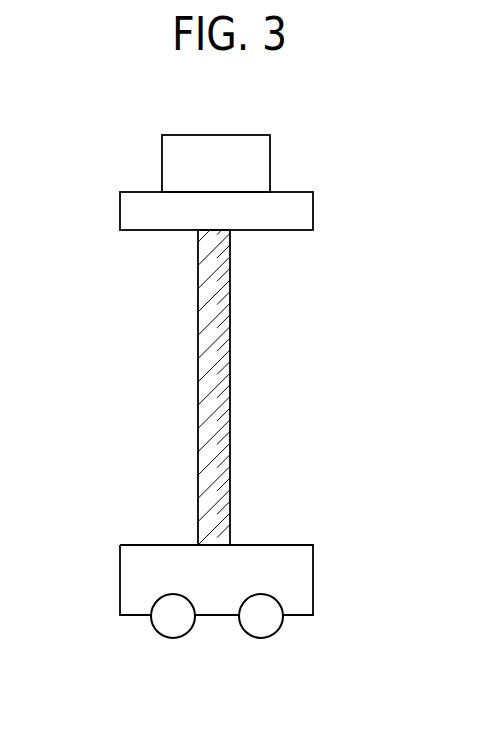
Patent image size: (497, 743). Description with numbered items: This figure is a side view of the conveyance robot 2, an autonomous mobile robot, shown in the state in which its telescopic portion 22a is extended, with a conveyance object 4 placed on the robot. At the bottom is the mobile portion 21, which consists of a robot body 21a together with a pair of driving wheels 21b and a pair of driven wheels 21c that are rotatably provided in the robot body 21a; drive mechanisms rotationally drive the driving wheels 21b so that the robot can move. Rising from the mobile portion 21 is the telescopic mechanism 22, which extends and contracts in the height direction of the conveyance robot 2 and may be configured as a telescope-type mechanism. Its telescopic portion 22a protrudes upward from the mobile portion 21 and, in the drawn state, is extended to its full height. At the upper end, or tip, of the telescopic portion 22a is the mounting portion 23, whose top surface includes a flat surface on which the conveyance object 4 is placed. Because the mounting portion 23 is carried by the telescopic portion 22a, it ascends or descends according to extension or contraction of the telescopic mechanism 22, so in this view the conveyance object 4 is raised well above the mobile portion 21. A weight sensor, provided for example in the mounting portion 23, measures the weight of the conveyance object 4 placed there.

The conveyance robot 2 is at (454, 82).
The conveyance object 4 is at (213, 160).
The mounting portion 23 is at (130, 222).
The telescopic portion 22a is at (226, 304).
The telescopic mechanism 22 is at (279, 377).
The mobile portion 21 is at (222, 626).
The robot body 21a is at (130, 566).
The driving wheels 21b is at (169, 625).
The driven wheels 21c is at (259, 624).